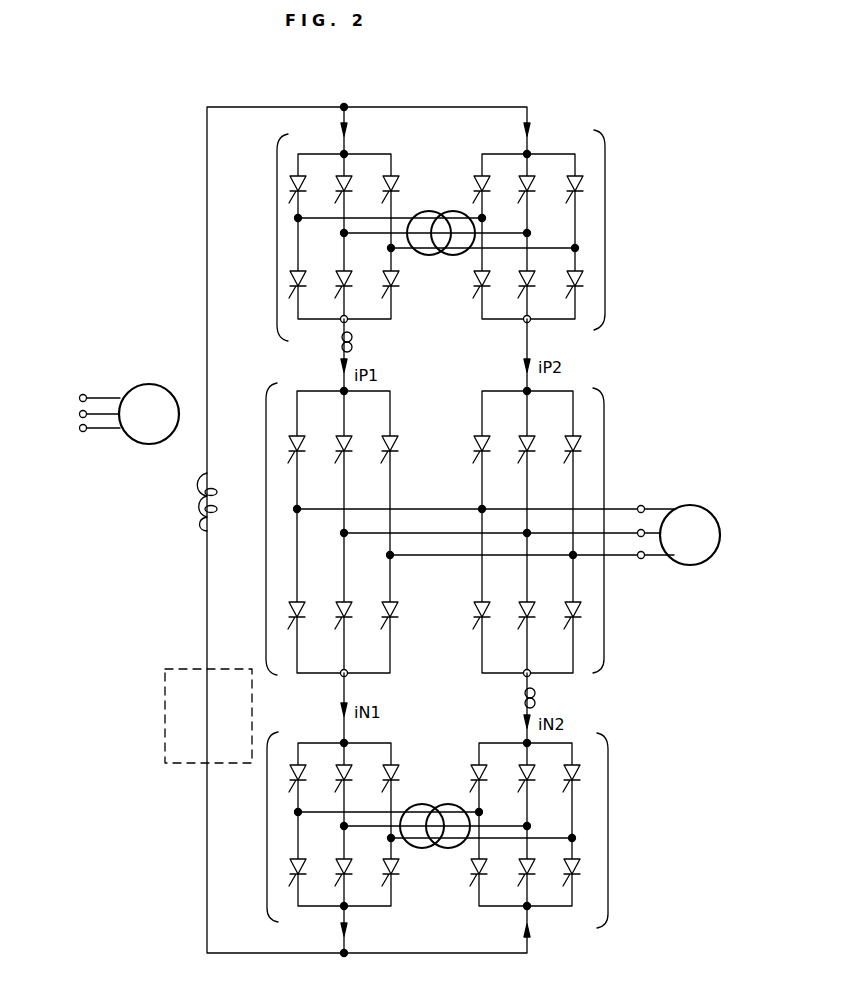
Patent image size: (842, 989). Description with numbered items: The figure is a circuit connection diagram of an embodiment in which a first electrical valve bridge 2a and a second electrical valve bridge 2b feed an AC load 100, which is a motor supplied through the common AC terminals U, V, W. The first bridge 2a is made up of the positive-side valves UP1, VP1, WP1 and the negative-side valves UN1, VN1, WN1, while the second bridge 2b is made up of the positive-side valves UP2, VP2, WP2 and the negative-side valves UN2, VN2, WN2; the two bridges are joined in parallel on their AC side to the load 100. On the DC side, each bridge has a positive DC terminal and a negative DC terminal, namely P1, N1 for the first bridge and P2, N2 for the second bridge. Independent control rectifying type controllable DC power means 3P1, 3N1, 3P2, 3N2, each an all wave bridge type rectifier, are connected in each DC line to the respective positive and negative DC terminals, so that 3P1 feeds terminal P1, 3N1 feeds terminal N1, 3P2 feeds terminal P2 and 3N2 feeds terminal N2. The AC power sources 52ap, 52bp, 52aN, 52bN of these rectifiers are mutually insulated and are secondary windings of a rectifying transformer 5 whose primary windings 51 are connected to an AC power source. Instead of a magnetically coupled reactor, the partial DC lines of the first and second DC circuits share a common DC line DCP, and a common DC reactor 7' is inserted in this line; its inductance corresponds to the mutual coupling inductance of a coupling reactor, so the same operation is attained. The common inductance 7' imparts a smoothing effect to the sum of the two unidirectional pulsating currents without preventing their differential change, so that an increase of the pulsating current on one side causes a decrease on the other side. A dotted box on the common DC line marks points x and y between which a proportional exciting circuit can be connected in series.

The rectifying transformer 5 is at (130, 374).
The primary windings 51 is at (149, 384).
The common DC reactor 7' is at (179, 511).
The common DC line DCP is at (207, 631).
The controllable DC power means 3P1 is at (290, 250).
The controllable DC power means 3P2 is at (545, 230).
The controllable DC power means 3N1 is at (284, 847).
The controllable DC power means 3N2 is at (634, 847).
The first electrical valve bridge 2a is at (337, 530).
The second electrical valve bridge 2b is at (526, 532).
The AC power source 52ap is at (431, 211).
The AC power source 52bp is at (452, 256).
The AC power source 52aN is at (422, 848).
The AC power source 52bN is at (444, 860).
The AC load 100 is at (712, 484).
The electrical valve UP1 is at (309, 441).
The electrical valve VP1 is at (355, 441).
The electrical valve WP1 is at (404, 441).
The electrical valve UN1 is at (310, 603).
The electrical valve VN1 is at (356, 603).
The electrical valve WN1 is at (405, 603).
The electrical valve UP2 is at (494, 441).
The electrical valve VP2 is at (540, 441).
The electrical valve WP2 is at (580, 440).
The electrical valve UN2 is at (463, 603).
The electrical valve VN2 is at (510, 603).
The electrical valve WN2 is at (556, 603).
The DC terminal P1 is at (344, 391).
The DC terminal P2 is at (527, 391).
The DC terminal N1 is at (341, 677).
The DC terminal N2 is at (524, 677).
The AC terminal U is at (642, 507).
The AC terminal V is at (638, 532).
The AC terminal W is at (641, 559).
The common DC line point x is at (215, 778).
The common DC line point y is at (208, 704).